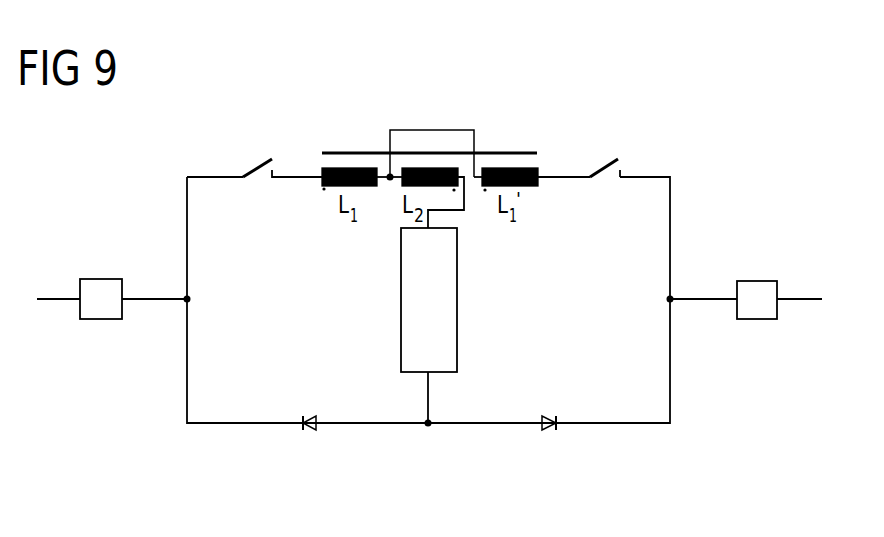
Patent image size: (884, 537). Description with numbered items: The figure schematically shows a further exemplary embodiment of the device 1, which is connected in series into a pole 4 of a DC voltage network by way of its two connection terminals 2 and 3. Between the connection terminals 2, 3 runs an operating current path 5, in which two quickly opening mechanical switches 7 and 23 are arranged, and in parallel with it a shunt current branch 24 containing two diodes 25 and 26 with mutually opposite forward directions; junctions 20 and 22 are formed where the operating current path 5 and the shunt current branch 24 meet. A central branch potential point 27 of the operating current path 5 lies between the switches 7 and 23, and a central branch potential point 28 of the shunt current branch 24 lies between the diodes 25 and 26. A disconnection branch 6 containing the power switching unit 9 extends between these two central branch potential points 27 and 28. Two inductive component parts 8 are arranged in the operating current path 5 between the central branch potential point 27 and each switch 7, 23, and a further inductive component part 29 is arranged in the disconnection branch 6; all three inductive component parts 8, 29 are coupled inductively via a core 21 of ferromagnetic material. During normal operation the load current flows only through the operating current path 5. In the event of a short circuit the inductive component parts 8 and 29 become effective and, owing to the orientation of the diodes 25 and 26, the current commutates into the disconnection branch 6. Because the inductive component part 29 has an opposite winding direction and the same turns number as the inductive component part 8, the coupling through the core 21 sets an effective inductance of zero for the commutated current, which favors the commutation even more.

The device 1 is at (774, 172).
The connection terminal 2 is at (100, 279).
The connection terminal 3 is at (753, 281).
The pole 4 is at (40, 298).
The operating current path 5 is at (197, 176).
The disconnection branch 6 is at (428, 397).
The mechanical switch 7 is at (253, 164).
The inductive component part 8 is at (321, 170).
The power switching unit 9 is at (457, 297).
The junction 20 is at (190, 299).
The core 21 is at (345, 152).
The junction 22 is at (668, 299).
The mechanical switch 23 is at (600, 162).
The shunt current branch 24 is at (231, 424).
The diode 25 is at (306, 431).
The diode 26 is at (548, 431).
The central branch potential point 27 is at (389, 182).
The central branch potential point 28 is at (427, 428).
The inductive component part 29 is at (425, 170).